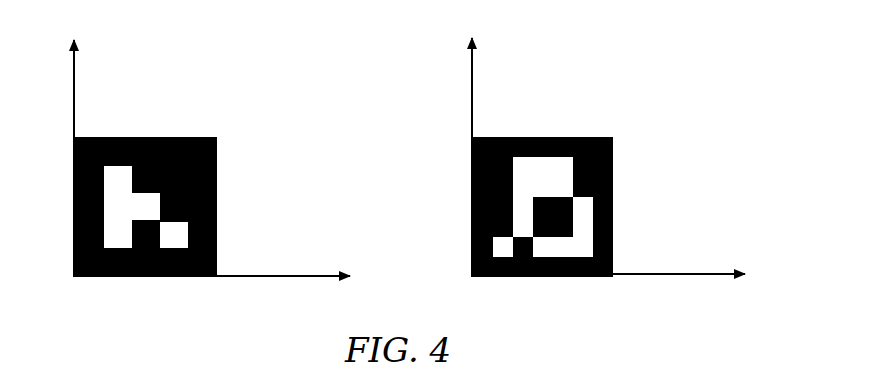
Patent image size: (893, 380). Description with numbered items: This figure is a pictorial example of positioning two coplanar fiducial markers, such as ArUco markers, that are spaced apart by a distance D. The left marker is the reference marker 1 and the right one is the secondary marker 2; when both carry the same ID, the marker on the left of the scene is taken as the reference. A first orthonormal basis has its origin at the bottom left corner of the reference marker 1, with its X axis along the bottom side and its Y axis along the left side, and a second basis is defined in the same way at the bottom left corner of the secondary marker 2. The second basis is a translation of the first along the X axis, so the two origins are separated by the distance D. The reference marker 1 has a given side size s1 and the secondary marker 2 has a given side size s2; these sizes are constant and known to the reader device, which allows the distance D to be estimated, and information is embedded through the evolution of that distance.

The reference marker 1 is at (198, 160).
The secondary marker 2 is at (603, 158).
The distance D is at (466, 118).
The side size of the reference marker s1 is at (199, 296).
The side size of the secondary marker s2 is at (599, 293).